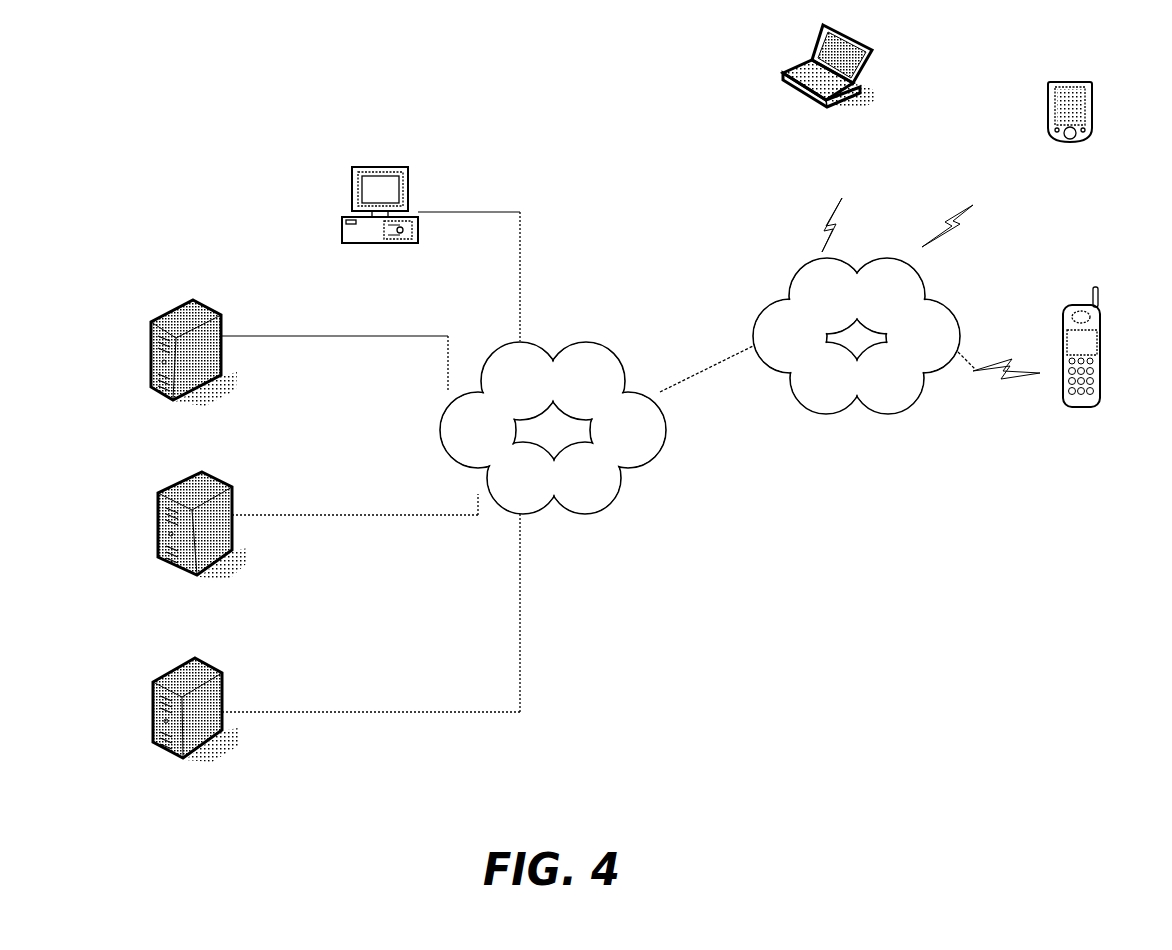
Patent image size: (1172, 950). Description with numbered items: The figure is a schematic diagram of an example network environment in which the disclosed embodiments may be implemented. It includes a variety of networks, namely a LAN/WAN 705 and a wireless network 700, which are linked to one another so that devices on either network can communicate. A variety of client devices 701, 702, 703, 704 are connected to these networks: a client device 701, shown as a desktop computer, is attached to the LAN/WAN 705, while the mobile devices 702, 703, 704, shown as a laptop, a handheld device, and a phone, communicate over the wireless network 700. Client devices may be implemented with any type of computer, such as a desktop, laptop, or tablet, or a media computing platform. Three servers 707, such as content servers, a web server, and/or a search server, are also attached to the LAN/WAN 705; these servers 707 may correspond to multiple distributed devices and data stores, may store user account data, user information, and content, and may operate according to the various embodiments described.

The wireless network 700 is at (801, 268).
The client device 701 is at (362, 168).
The mobile device 702 is at (791, 70).
The mobile device 703 is at (1050, 81).
The mobile device 704 is at (1070, 308).
The LAN/WAN 705 is at (581, 342).
The servers 707 is at (152, 321).